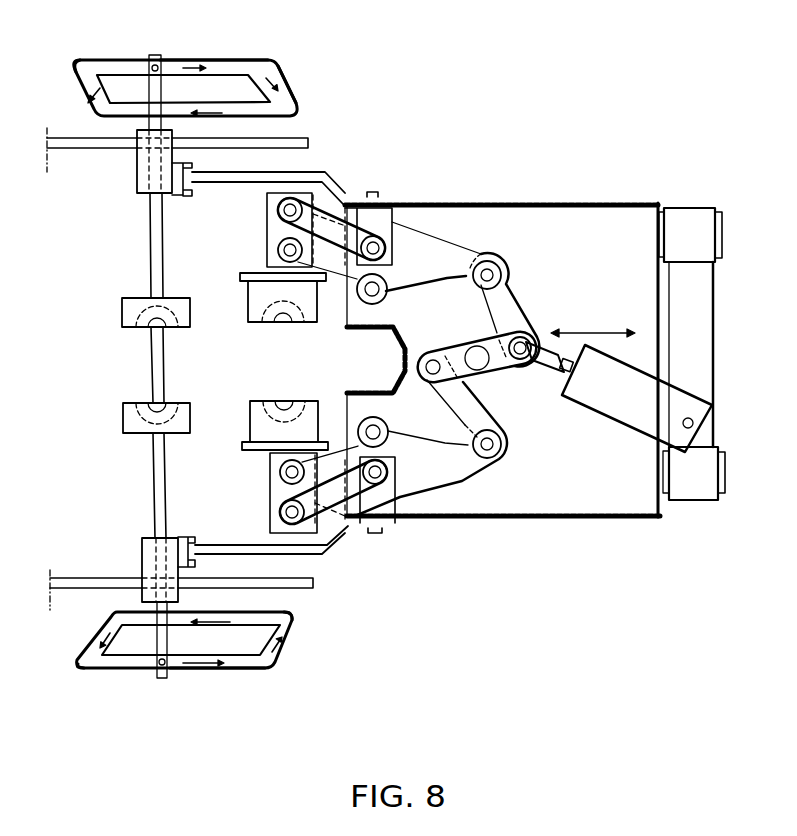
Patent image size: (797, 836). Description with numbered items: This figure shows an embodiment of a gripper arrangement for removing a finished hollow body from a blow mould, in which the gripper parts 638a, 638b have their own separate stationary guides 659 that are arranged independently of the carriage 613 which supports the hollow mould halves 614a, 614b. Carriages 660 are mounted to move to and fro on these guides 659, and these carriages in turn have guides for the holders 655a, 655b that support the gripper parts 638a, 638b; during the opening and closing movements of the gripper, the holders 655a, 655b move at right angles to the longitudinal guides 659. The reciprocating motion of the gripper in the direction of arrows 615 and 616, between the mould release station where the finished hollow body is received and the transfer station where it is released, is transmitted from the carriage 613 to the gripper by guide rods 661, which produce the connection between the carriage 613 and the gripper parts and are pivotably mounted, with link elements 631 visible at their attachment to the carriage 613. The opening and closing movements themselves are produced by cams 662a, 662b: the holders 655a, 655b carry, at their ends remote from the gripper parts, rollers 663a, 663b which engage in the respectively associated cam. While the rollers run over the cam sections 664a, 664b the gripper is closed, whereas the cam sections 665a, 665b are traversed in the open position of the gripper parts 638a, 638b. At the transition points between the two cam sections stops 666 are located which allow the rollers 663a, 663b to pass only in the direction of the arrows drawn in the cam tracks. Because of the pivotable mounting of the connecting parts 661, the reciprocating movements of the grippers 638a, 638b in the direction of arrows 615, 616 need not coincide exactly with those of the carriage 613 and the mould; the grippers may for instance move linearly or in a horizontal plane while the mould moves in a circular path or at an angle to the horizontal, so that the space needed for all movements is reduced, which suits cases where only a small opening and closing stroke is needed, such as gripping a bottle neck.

The carriage 613 is at (552, 200).
The hollow mould half 614a is at (260, 410).
The hollow mould half 614b is at (257, 320).
The arrow 615 is at (570, 333).
The arrow 616 is at (619, 331).
The toggle link 631 is at (442, 243).
The gripper part 638a is at (130, 410).
The gripper part 638b is at (128, 321).
The holder 655a is at (158, 478).
The holder 655b is at (155, 243).
The stationary guide 659 is at (285, 138).
The carriage 660 is at (137, 177).
The guide rod 661 is at (295, 175).
The cam 662a is at (255, 682).
The cam 662b is at (254, 45).
The roller 663a is at (167, 664).
The roller 663b is at (160, 67).
The cam section 664a is at (283, 612).
The cam section 664b is at (128, 116).
The cam section 665a is at (207, 668).
The cam section 665b is at (190, 68).
The stop 666 is at (87, 77).